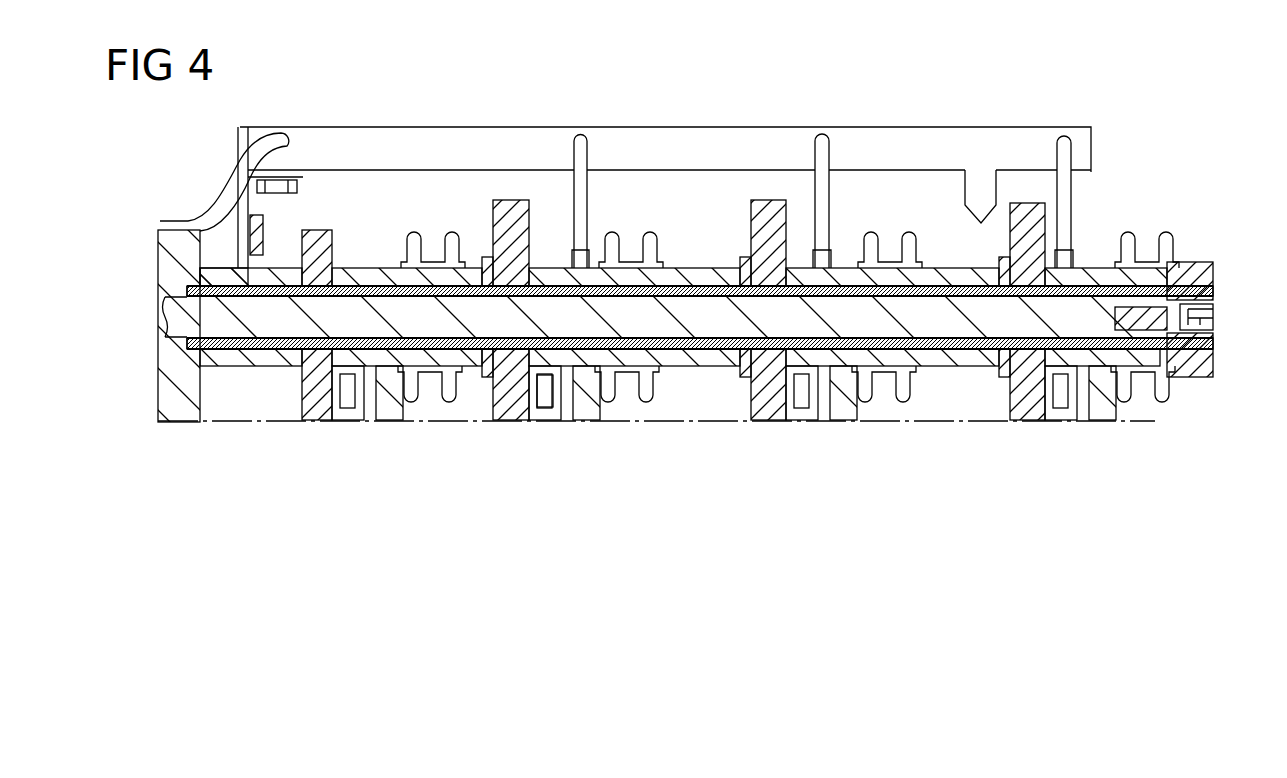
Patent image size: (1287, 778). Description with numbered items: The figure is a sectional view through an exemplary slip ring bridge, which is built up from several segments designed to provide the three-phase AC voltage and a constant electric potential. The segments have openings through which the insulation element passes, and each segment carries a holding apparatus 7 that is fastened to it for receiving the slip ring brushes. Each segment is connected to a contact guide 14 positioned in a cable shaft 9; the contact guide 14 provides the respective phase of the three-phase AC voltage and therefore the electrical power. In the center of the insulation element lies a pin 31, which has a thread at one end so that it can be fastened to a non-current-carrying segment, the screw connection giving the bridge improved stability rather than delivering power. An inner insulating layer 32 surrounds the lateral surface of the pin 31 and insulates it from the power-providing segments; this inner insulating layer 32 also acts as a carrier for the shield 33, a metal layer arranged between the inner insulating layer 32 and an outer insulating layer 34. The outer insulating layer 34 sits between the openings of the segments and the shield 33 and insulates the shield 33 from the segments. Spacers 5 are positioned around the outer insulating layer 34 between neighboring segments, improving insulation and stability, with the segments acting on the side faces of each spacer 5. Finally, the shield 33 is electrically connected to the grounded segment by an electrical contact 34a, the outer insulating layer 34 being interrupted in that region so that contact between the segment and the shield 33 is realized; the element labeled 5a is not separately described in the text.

The contact guide 14 is at (740, 127).
The cable shaft 9 is at (240, 184).
The pin 31 is at (168, 316).
The inner insulating layer 32 is at (240, 360).
The shield 33 is at (1086, 308).
The outer insulating layer 34 is at (693, 275).
The electrical contact 34a is at (290, 382).
The spacer 5 is at (468, 378).
The contact spring 5a is at (885, 220).
The holding apparatus 7 is at (585, 407).